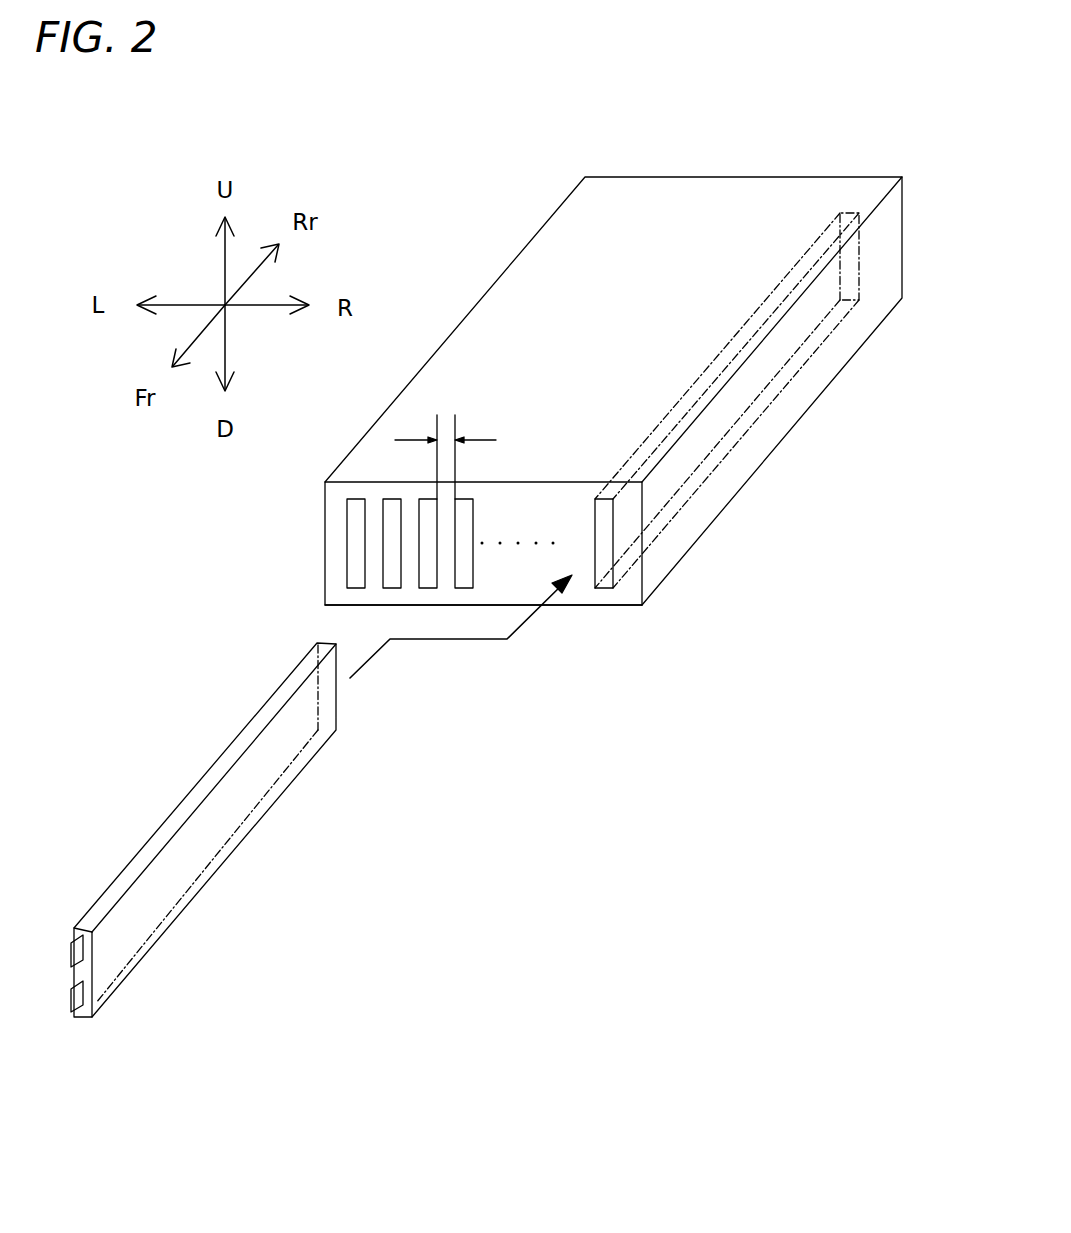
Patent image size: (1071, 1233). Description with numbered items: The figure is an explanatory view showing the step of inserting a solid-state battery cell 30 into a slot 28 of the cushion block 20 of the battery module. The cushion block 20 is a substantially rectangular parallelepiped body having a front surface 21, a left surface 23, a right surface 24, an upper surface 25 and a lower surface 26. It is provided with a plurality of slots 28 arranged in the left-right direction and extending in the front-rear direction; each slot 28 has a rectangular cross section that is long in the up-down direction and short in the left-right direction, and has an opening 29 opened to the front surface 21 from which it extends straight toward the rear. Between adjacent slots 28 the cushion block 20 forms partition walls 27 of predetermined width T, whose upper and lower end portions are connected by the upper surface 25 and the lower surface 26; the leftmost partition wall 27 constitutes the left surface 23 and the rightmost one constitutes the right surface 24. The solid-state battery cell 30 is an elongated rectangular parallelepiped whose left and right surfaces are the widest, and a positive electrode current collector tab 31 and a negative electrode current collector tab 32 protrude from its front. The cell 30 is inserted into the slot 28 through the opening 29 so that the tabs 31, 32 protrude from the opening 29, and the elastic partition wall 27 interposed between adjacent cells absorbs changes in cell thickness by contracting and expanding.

The cushion block 20 is at (764, 176).
The front surface 21 is at (563, 595).
The left surface 23 is at (323, 538).
The right surface 24 is at (832, 360).
The upper surface 25 is at (547, 345).
The lower surface 26 is at (618, 607).
The partition wall 27 is at (410, 562).
The slot 28 is at (392, 507).
The opening 29 is at (607, 570).
The solid-state battery cell 30 is at (202, 772).
The positive electrode current collector tab 31 is at (72, 1008).
The negative electrode current collector tab 32 is at (70, 955).